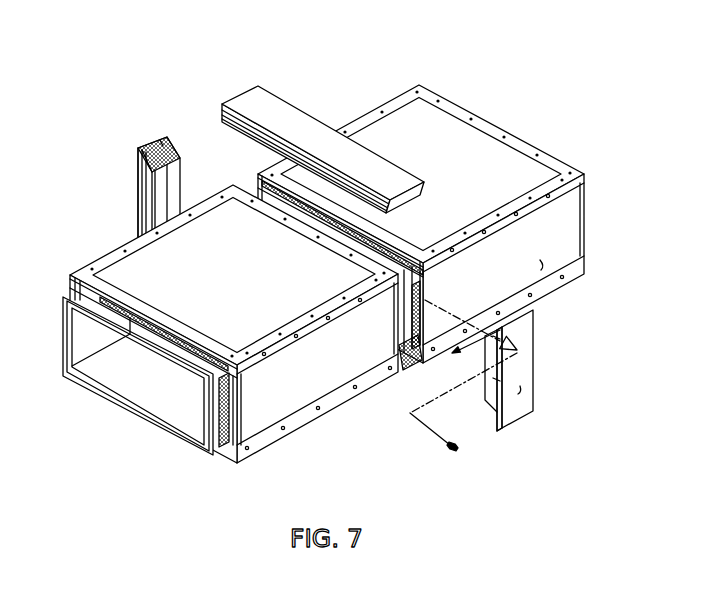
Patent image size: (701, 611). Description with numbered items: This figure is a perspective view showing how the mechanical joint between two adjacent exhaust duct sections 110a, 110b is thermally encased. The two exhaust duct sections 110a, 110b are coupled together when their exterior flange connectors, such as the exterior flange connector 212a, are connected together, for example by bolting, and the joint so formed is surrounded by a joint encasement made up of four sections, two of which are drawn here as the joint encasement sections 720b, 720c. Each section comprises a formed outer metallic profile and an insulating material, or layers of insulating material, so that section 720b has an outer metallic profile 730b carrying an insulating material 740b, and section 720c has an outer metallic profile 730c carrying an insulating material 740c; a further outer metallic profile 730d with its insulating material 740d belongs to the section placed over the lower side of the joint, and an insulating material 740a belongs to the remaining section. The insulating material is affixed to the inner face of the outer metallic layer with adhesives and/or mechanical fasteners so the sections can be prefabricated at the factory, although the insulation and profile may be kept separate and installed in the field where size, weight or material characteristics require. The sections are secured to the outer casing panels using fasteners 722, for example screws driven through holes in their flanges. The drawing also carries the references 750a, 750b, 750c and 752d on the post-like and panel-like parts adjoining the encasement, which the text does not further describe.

The exhaust duct section 110a is at (104, 230).
The exhaust duct section 110b is at (390, 66).
The exterior flange connector 212a is at (131, 426).
The joint encasement section 720b is at (158, 140).
The outer metallic profile 730b is at (140, 162).
The insulating material 740b is at (142, 197).
The vertical post body 750b is at (178, 178).
The joint encasement section 720c is at (252, 92).
The outer metallic profile 730c is at (278, 112).
The insulating material 740c is at (421, 187).
The horizontal bar body 750c is at (380, 211).
The insulating material 740a is at (558, 321).
The lower gasket block 750a is at (422, 361).
The outer metallic profile 730d is at (523, 389).
The insulating material 740d is at (502, 422).
The side panel bracket 752d is at (489, 407).
The fastener 722 is at (446, 444).